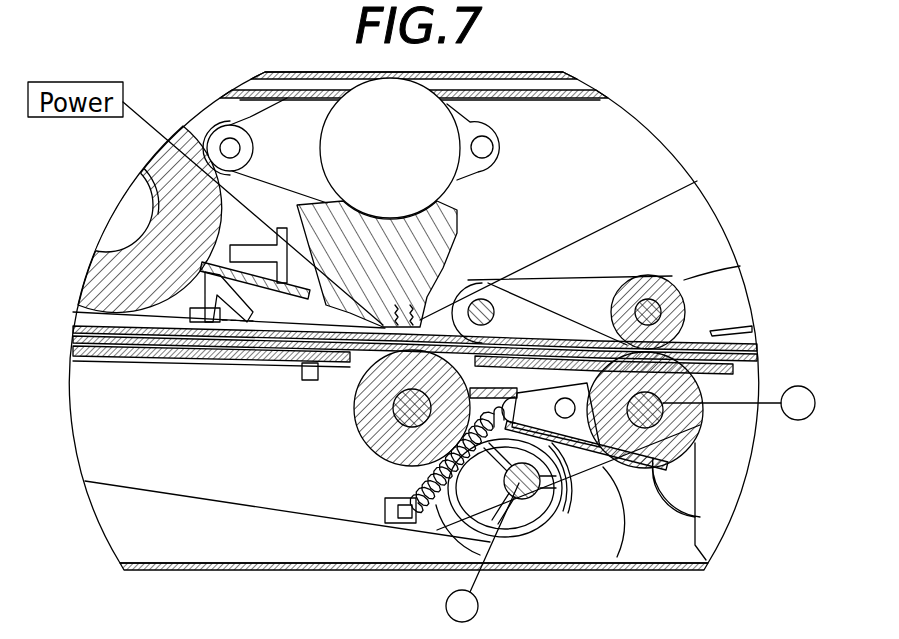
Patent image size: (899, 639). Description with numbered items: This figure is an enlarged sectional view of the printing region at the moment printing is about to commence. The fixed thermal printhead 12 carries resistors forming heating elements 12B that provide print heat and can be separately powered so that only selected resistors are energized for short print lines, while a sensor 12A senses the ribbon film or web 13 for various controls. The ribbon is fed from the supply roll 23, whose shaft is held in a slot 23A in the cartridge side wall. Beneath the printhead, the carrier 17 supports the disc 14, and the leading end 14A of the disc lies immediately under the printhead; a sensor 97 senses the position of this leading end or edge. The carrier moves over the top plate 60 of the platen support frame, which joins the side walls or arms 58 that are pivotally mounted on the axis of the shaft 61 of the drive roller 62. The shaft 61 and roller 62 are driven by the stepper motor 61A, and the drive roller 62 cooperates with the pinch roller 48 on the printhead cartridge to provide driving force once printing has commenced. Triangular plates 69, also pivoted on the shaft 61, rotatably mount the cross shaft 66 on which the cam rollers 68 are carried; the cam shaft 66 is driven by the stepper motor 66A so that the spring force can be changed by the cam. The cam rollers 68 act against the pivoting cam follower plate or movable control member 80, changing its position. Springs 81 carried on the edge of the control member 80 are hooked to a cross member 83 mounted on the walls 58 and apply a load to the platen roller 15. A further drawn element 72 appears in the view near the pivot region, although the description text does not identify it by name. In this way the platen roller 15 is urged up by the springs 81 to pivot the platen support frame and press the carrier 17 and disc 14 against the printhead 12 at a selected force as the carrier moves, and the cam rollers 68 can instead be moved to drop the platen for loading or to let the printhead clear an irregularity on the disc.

The thermal printhead 12 is at (307, 283).
The sensor 12A is at (490, 275).
The resistors forming heating elements 12B is at (508, 246).
The ribbon film or web 13 is at (604, 228).
The disc 14 is at (108, 320).
The leading end of disc 14A is at (492, 325).
The platen roller 15 is at (354, 412).
The carrier 17 is at (580, 338).
The supply roll 23 is at (154, 159).
The slot 23A is at (433, 131).
The pinch roller 48 is at (657, 280).
The side walls or arms 58 is at (187, 478).
The top plate 60 is at (88, 360).
The shaft 61 is at (660, 407).
The stepper motor 61A is at (790, 388).
The drive roller 62 is at (687, 432).
The cross shaft 66 is at (531, 495).
The stepper motor 66A is at (480, 598).
The cam rollers 68 is at (462, 508).
The triangular plates 69 is at (603, 467).
The pressure lever 72 is at (493, 283).
The pivoting cam follower plate or movable control member 80 is at (522, 426).
The springs 81 is at (437, 475).
The cross member 83 is at (383, 508).
The sensor 97 is at (310, 380).